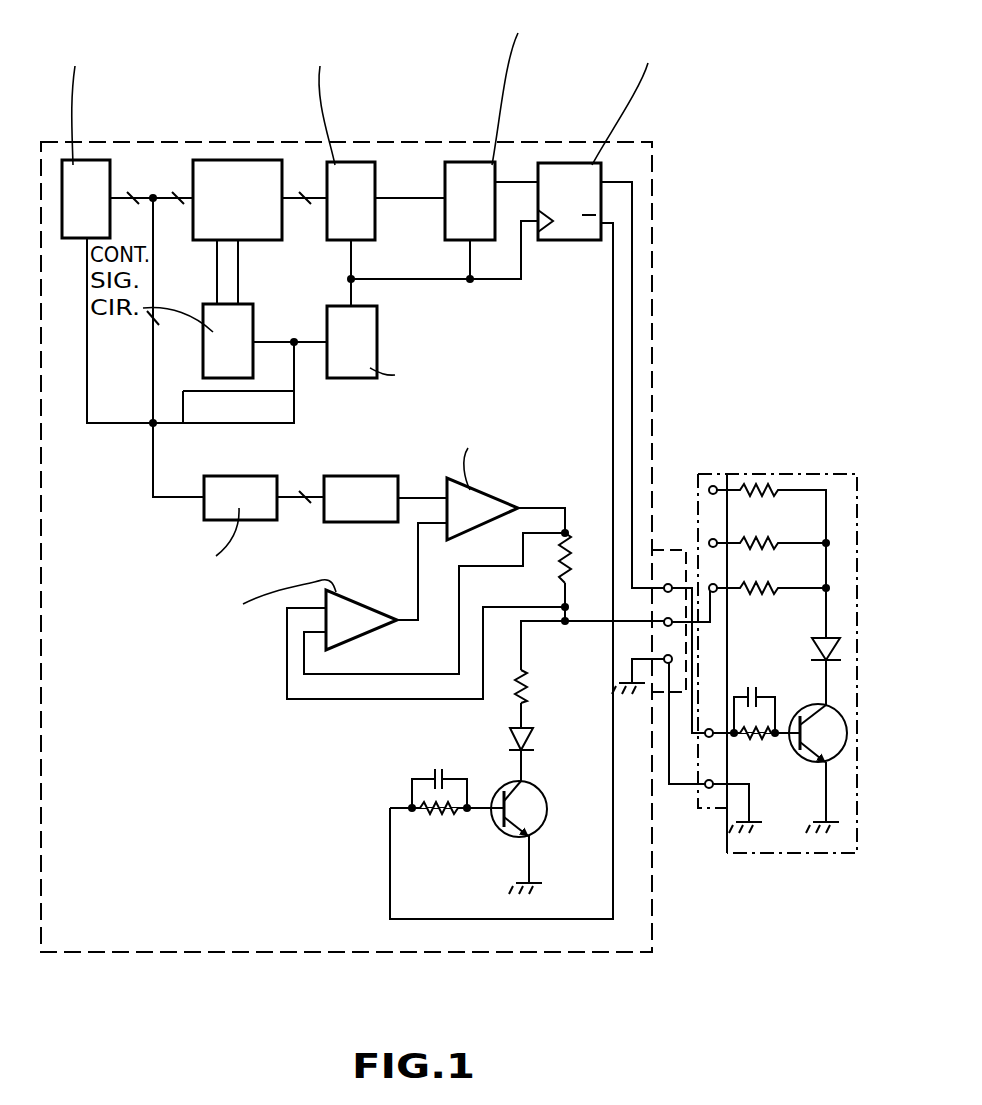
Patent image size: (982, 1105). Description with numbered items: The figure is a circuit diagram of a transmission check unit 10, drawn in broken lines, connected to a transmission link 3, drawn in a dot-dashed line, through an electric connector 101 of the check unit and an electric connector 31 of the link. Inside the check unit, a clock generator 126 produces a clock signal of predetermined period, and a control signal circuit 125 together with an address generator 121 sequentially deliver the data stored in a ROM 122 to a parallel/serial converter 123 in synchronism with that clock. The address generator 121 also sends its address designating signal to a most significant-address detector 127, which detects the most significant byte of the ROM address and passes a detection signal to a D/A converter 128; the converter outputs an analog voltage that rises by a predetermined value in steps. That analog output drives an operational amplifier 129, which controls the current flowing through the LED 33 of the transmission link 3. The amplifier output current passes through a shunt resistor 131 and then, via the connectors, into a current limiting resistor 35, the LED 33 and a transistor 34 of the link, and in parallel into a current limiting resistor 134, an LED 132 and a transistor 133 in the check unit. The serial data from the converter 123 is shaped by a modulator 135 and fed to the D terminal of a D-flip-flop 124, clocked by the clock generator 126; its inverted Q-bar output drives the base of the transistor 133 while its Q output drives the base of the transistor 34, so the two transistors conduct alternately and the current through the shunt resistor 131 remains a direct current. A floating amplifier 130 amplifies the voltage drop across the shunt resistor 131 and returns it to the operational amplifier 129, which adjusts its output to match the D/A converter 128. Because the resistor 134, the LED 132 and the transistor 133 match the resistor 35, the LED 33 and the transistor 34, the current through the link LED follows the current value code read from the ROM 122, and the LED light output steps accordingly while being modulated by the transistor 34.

The transmission check unit 10 is at (665, 335).
The address generator 121 is at (93, 165).
The ROM 122 is at (242, 165).
The parallel/serial converter 123 is at (351, 165).
The D-flip-flop 124 is at (576, 165).
The control signal circuit 125 is at (243, 320).
The clock generator 126 is at (368, 360).
The most significant-address detector 127 is at (253, 482).
The D/A converter 128 is at (380, 483).
The operational amplifier 129 is at (485, 498).
The floating amplifier 130 is at (358, 608).
The shunt resistor 131 is at (583, 553).
The LED 132 is at (538, 748).
The transistor 133 is at (548, 820).
The current limiting resistor 134 is at (540, 700).
The modulator 135 is at (470, 165).
The electric connector 101 is at (674, 548).
The transmission link 3 is at (745, 862).
The electric connector 31 is at (712, 474).
The LED 33 is at (812, 648).
The transistor 34 is at (805, 772).
The current limiting resistor 35 is at (785, 575).